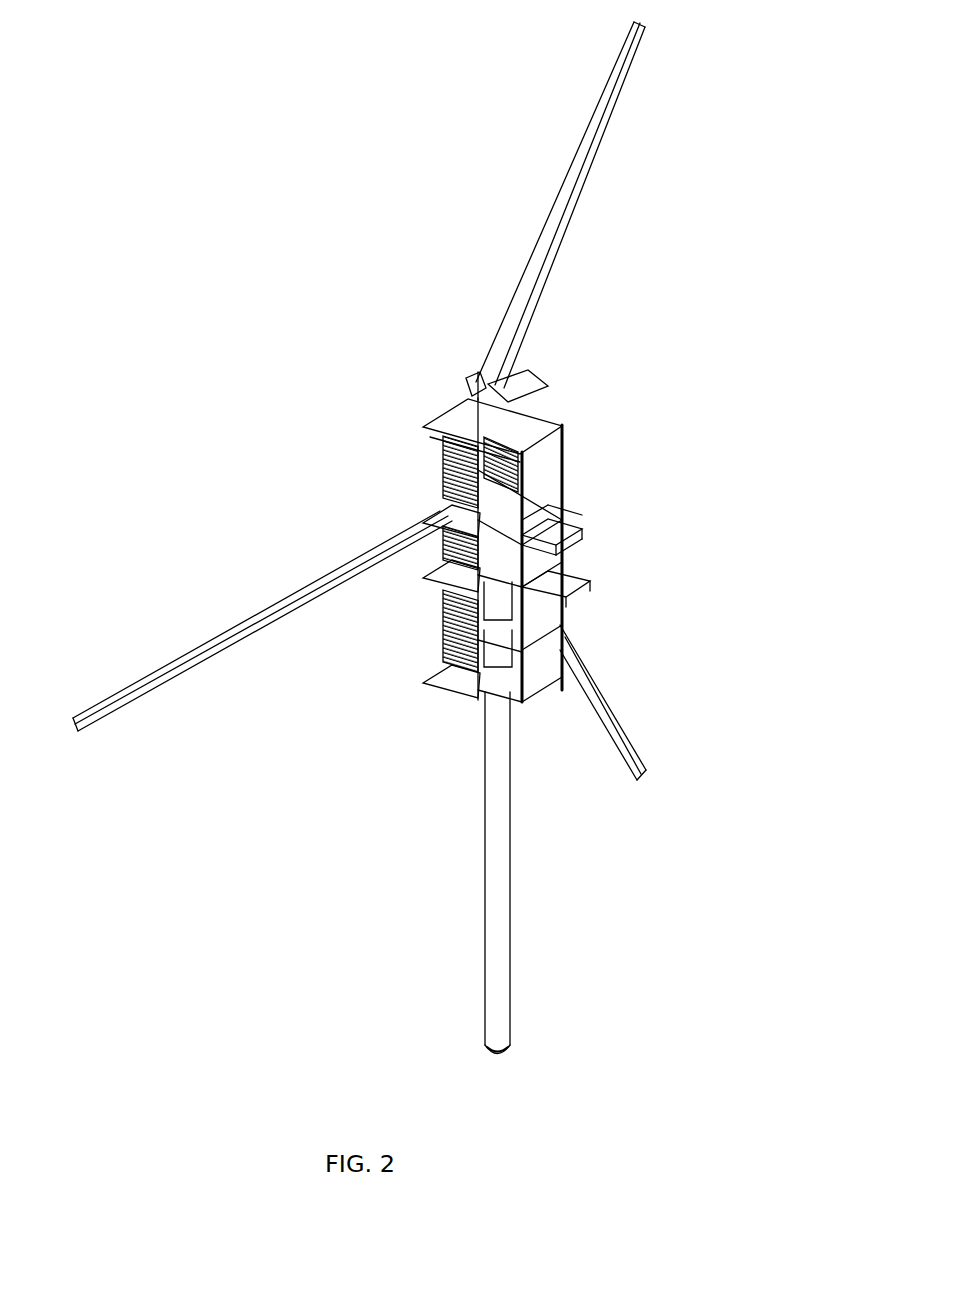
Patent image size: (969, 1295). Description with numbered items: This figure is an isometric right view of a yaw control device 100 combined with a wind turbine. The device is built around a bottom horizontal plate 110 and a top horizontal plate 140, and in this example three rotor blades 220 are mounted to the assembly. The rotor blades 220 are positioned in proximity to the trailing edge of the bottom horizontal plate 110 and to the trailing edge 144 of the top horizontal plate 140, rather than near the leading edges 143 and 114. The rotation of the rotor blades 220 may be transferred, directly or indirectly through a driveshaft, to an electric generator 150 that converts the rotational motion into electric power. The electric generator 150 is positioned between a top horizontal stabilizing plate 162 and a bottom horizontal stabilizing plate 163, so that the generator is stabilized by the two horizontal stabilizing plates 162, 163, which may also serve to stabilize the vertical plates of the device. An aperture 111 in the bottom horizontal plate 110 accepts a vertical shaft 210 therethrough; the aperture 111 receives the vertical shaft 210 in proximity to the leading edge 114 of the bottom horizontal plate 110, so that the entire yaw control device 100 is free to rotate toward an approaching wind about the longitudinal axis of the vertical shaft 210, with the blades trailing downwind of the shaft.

The yaw control device 100 is at (722, 237).
The bottom horizontal plate 110 is at (555, 582).
The aperture 111 is at (490, 685).
The leading edge 114 is at (540, 685).
The top horizontal plate 140 is at (527, 422).
The leading edge 143 is at (566, 430).
The trailing edge 144 is at (470, 400).
The electric generator 150 is at (563, 562).
The top horizontal stabilizing plate 162 is at (547, 518).
The bottom horizontal stabilizing plate 163 is at (582, 583).
The vertical shaft 210 is at (485, 905).
The rotor blades 220 is at (623, 77).